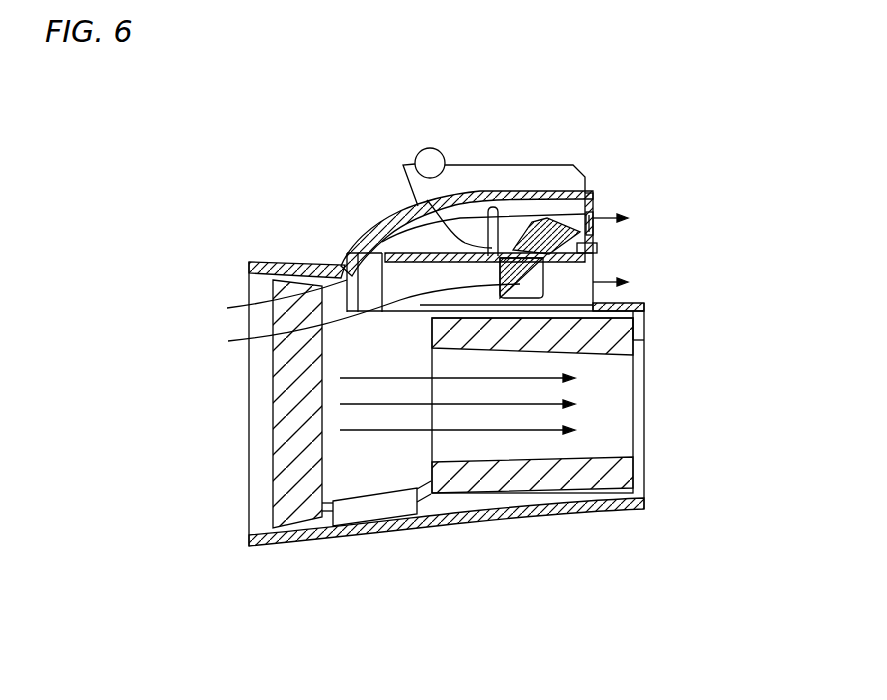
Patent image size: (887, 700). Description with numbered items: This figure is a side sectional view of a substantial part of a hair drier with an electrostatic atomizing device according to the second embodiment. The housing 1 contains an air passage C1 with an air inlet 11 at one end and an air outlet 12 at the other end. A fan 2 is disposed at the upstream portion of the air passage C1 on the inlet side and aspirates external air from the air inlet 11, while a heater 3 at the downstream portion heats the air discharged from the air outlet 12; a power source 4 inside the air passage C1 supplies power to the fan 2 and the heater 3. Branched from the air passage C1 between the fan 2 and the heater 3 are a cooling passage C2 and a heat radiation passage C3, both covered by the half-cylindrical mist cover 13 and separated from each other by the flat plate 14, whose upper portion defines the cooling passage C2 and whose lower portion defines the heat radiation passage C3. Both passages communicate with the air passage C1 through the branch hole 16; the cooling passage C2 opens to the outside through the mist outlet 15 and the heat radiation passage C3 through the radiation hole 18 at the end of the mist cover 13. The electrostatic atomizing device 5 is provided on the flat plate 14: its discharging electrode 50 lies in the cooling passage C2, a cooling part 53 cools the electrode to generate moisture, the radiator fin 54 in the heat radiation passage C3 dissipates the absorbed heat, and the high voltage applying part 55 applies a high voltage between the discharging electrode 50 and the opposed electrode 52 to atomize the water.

The housing 1 is at (465, 520).
The fan 2 is at (278, 427).
The heater 3 is at (572, 483).
The power source 4 is at (376, 505).
The electrostatic atomizing device 5 is at (537, 225).
The air inlet 11 is at (252, 395).
The air outlet 12 is at (640, 398).
The mist cover 13 is at (558, 197).
The flat plate 14 is at (595, 247).
The mist outlet 15 is at (597, 213).
The branch hole 16 is at (372, 293).
The radiation hole 18 is at (593, 299).
The discharging electrode 50 is at (526, 238).
The opposed electrode 52 is at (593, 217).
The cooling part 53 is at (505, 260).
The radiator fin 54 is at (527, 277).
The high voltage applying part 55 is at (422, 148).
The air passage C1 is at (380, 404).
The cooling passage C2 is at (468, 218).
The heat radiation passage C3 is at (430, 292).